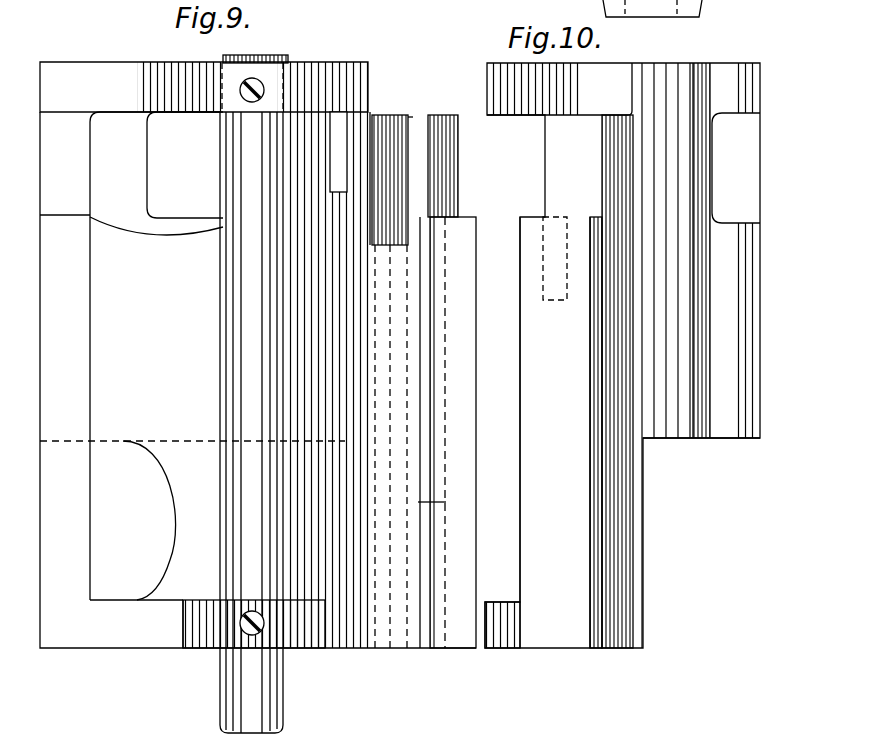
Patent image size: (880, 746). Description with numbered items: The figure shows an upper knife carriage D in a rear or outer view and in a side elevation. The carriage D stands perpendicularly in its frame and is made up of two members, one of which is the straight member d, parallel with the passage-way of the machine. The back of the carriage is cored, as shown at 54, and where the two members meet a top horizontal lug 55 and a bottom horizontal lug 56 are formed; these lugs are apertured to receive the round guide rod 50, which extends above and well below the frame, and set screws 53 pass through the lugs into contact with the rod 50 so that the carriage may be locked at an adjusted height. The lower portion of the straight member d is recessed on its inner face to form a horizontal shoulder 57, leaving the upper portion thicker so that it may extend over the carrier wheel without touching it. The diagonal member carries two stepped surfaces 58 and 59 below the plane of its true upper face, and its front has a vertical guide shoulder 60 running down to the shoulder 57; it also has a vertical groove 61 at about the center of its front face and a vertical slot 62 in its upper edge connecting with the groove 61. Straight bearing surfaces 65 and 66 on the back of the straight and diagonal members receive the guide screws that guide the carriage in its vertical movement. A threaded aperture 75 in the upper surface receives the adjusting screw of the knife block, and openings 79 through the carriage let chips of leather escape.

In FIG. 9, the guide rod 50 is at (254, 394).
In FIG. 9, the set screw 53 is at (240, 625).
In FIG. 9, the cored back of carriage 54 is at (375, 380).
In FIG. 9, the top horizontal lug 55 is at (287, 86).
In FIG. 10, the top horizontal lug 55 is at (622, 355).
In FIG. 9, the bottom horizontal lug 56 is at (240, 605).
In FIG. 10, the bottom horizontal lug 56 is at (500, 601).
In FIG. 10, the horizontal shoulder 57 is at (712, 440).
In FIG. 9, the stepped surface 58 is at (245, 86).
In FIG. 10, the stepped surface 58 is at (597, 114).
In FIG. 9, the stepped surface 59 is at (456, 217).
In FIG. 10, the stepped surface 59 is at (568, 221).
In FIG. 10, the vertical guide shoulder 60 is at (695, 355).
In FIG. 9, the vertical groove 61 is at (444, 504).
In FIG. 9, the vertical slot 62 is at (385, 128).
In FIG. 9, the bearing surface 65 is at (453, 432).
In FIG. 10, the bearing surface 65 is at (555, 432).
In FIG. 9, the bearing surface 66 is at (258, 355).
In FIG. 10, the aperture 75 is at (560, 258).
In FIG. 9, the opening 79 is at (185, 165).
In FIG. 10, the opening 79 is at (736, 168).
In FIG. 10, the knife carriage D is at (692, 44).
In FIG. 10, the straight member d is at (600, 298).